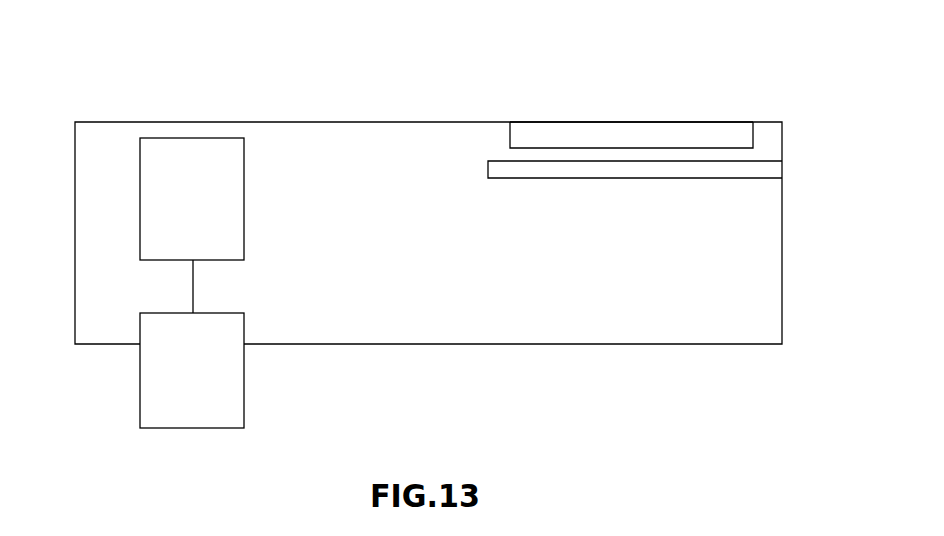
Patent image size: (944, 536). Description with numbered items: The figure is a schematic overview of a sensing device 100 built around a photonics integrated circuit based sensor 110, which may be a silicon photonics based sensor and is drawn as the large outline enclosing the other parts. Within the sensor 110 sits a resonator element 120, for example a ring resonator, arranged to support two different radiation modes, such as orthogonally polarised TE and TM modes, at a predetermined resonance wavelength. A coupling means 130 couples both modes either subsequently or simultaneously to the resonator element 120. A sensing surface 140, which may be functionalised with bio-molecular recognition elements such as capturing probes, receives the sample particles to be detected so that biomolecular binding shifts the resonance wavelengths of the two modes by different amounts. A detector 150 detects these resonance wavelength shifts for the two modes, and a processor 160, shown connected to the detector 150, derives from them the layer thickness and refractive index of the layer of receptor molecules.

The sensing device 100 is at (124, 84).
The photonics integrated circuit based sensor 110 is at (445, 345).
The resonator element 120 is at (530, 140).
The coupling means 130 is at (765, 160).
The sensing surface 140 is at (645, 122).
The detector 150 is at (163, 138).
The processor 160 is at (245, 397).